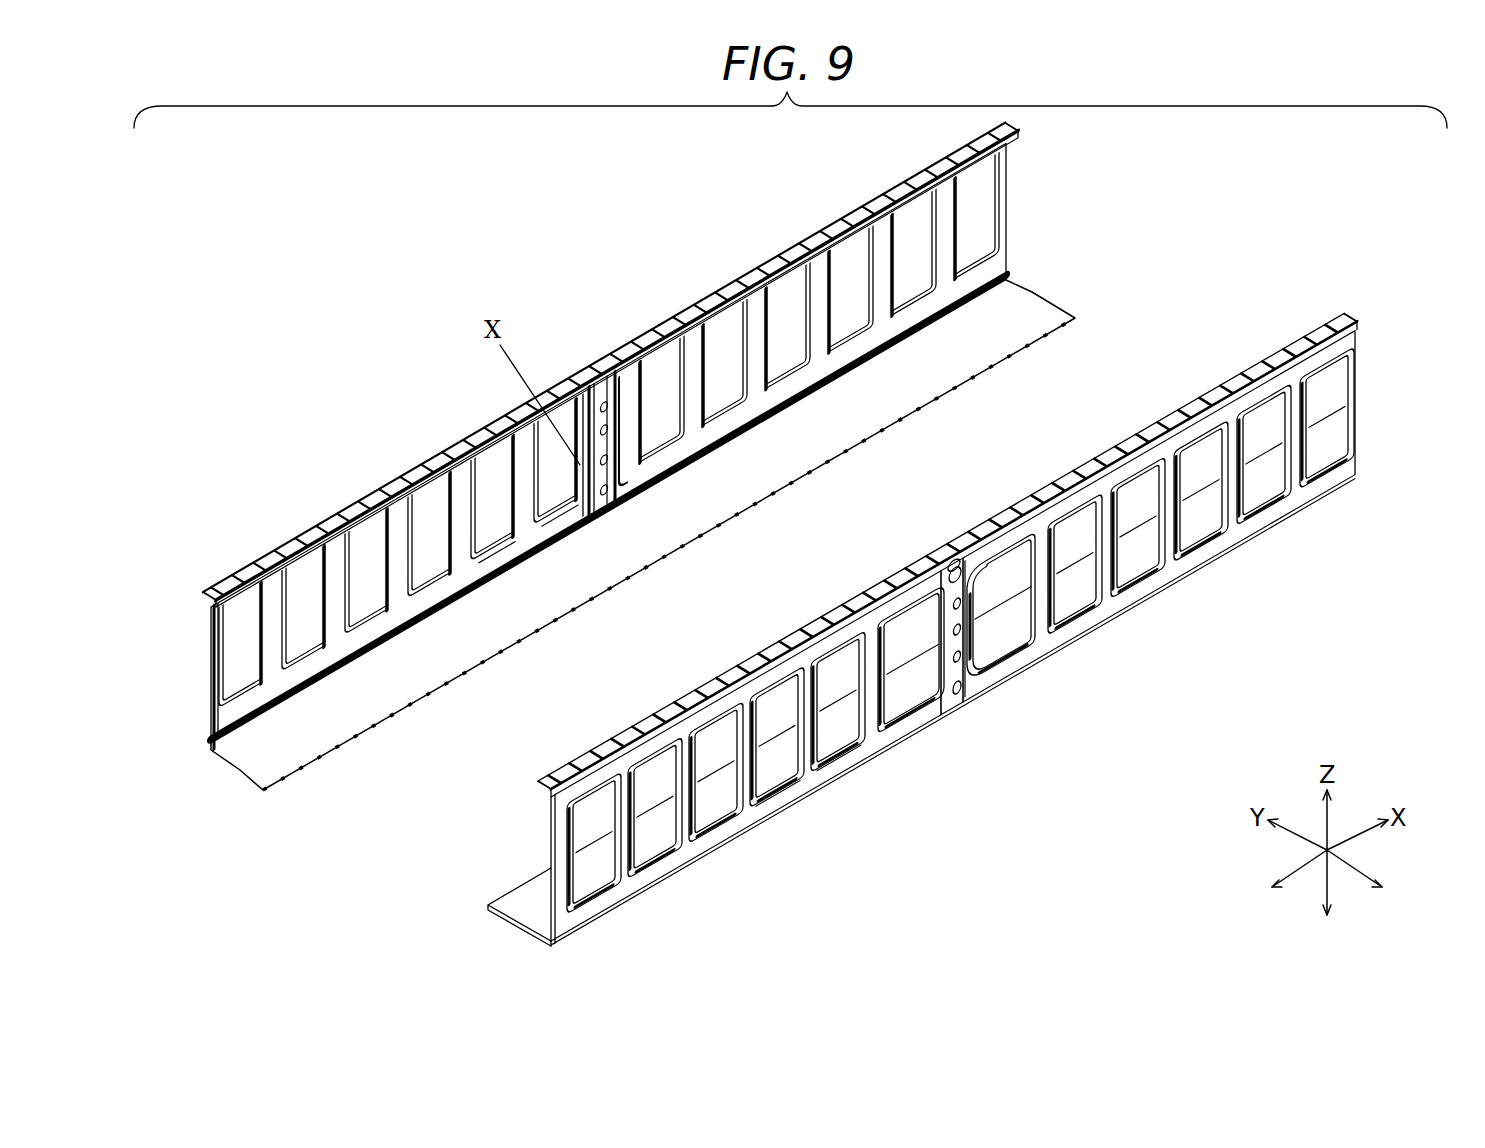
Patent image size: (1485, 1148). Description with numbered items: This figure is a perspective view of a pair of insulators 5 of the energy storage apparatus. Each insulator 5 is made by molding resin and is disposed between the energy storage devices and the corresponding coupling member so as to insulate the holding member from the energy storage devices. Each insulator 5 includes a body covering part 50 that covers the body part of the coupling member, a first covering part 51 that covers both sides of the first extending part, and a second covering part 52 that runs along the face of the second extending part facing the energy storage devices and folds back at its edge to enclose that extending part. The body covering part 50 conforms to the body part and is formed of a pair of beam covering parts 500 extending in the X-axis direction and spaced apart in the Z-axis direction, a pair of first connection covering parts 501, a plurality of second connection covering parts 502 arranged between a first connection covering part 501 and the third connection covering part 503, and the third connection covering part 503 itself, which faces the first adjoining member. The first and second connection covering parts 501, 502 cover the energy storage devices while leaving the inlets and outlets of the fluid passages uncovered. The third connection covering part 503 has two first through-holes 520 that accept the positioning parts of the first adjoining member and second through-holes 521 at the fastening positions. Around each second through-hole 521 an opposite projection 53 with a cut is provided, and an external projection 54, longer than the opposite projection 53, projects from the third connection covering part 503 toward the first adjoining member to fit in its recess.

The insulator 5 is at (772, 538).
The body covering part 50 is at (772, 538).
The first covering part 51 is at (390, 498).
The second covering part 52 is at (330, 718).
The opposite projection 53 is at (612, 505).
The external projection 54 is at (588, 445).
The beam covering part 500 is at (540, 600).
The first connection covering part 501 is at (1010, 172).
The second connection covering part 502 is at (938, 255).
The third connection covering part 503 is at (662, 515).
The first through-hole 520 is at (615, 385).
The second through-hole 521 is at (605, 405).